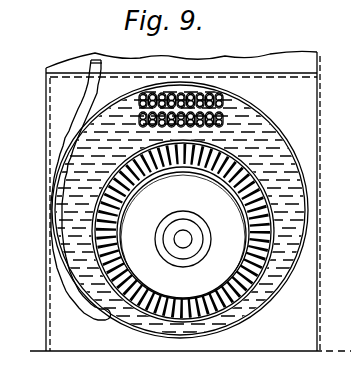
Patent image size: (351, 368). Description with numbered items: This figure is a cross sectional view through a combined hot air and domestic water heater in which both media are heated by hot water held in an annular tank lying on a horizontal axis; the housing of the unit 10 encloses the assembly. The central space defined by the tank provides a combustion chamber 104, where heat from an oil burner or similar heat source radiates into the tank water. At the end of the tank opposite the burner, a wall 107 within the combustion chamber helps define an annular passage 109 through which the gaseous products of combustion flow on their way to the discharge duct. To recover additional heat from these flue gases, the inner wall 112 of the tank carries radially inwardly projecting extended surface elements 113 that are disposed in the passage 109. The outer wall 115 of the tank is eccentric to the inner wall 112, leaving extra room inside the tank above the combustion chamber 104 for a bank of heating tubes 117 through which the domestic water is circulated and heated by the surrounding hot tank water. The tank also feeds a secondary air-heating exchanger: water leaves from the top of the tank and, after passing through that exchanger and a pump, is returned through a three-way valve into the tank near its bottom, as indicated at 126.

The apparatus tank 10 is at (303, 188).
The combustion chamber 104 is at (181, 205).
The wall 107 is at (238, 208).
The annular passage 109 is at (210, 288).
The inner wall 112 is at (248, 297).
The extended surface elements 113 is at (248, 232).
The outer wall 115 is at (266, 117).
The heating tubes 117 is at (220, 97).
The pump discharge connection to tank 126 is at (110, 318).